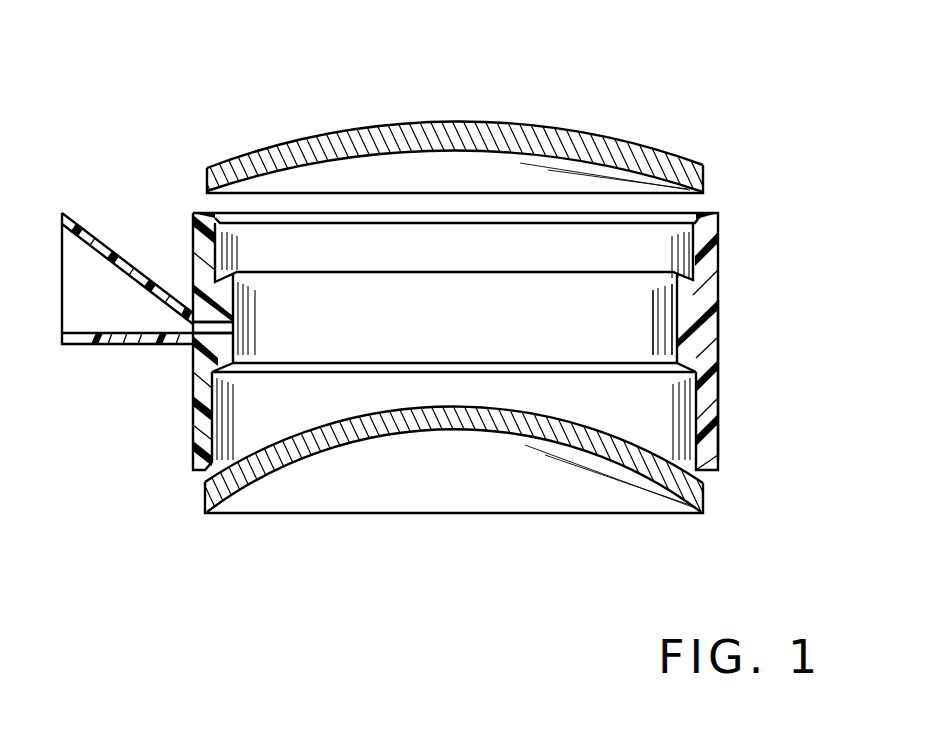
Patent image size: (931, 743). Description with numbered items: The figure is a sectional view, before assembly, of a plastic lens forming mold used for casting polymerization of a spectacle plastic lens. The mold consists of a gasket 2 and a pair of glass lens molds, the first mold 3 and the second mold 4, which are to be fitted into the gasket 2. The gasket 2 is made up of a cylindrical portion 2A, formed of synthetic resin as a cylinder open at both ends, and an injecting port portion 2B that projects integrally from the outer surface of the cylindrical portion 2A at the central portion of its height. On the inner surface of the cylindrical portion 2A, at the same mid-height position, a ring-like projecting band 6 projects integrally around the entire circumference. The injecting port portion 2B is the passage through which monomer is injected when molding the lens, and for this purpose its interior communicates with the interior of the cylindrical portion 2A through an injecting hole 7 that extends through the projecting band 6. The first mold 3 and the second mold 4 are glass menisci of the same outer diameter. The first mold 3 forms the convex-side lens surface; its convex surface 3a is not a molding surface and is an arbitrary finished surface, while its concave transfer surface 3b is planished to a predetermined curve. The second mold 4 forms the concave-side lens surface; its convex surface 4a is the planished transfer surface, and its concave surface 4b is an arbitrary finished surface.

The gasket 2 is at (734, 255).
The cylindrical portion 2A is at (720, 378).
The injecting port portion 2B is at (105, 347).
The first mold 3 is at (447, 132).
The convex surface 3a is at (489, 128).
The transfer surface 3b is at (333, 175).
The second mold 4 is at (456, 501).
The convex surface 4a is at (612, 438).
The concave surface 4b is at (558, 454).
The projecting band 6 is at (664, 322).
The injecting hole 7 is at (222, 325).